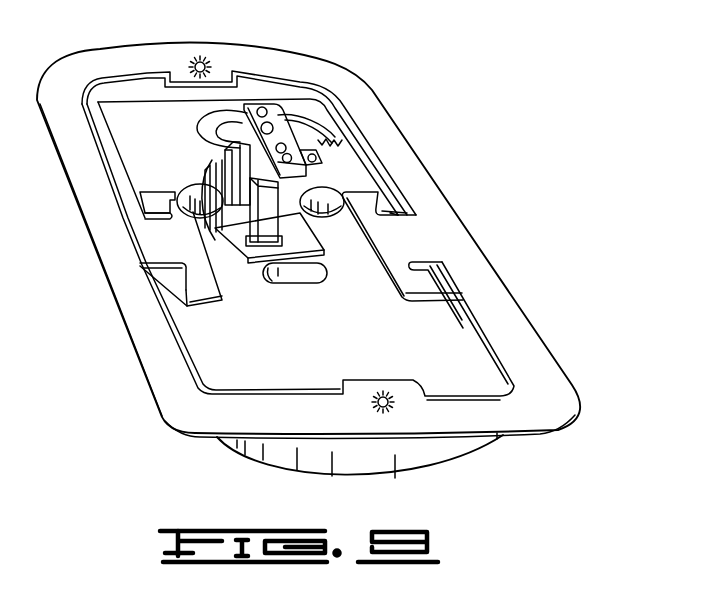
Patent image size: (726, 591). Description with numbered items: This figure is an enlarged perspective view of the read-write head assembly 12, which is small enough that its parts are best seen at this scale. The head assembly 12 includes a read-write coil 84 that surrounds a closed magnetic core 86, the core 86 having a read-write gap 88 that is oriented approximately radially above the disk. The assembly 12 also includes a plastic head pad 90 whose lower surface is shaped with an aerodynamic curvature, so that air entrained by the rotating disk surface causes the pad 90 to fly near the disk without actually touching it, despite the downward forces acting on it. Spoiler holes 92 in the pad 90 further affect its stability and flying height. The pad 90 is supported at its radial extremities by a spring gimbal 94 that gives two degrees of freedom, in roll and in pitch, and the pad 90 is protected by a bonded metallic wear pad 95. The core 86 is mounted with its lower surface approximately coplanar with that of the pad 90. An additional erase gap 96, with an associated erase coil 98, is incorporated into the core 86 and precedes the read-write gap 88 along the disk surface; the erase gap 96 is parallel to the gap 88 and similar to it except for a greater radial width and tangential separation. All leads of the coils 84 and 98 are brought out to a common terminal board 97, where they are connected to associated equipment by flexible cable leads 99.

The read-write head assembly 12 is at (355, 55).
The read-write coil 84 is at (221, 152).
The closed magnetic core 86 is at (258, 206).
The read-write gap 88 is at (202, 202).
The plastic head pad 90 is at (448, 327).
The spoiler holes 92 is at (180, 220).
The spring gimbal 94 is at (170, 397).
The bonded metallic wear pad 95 is at (252, 258).
The erase gap 96 is at (240, 245).
The common terminal board 97 is at (292, 130).
The erase coil 98 is at (318, 160).
The flexible cable leads 99 is at (322, 143).